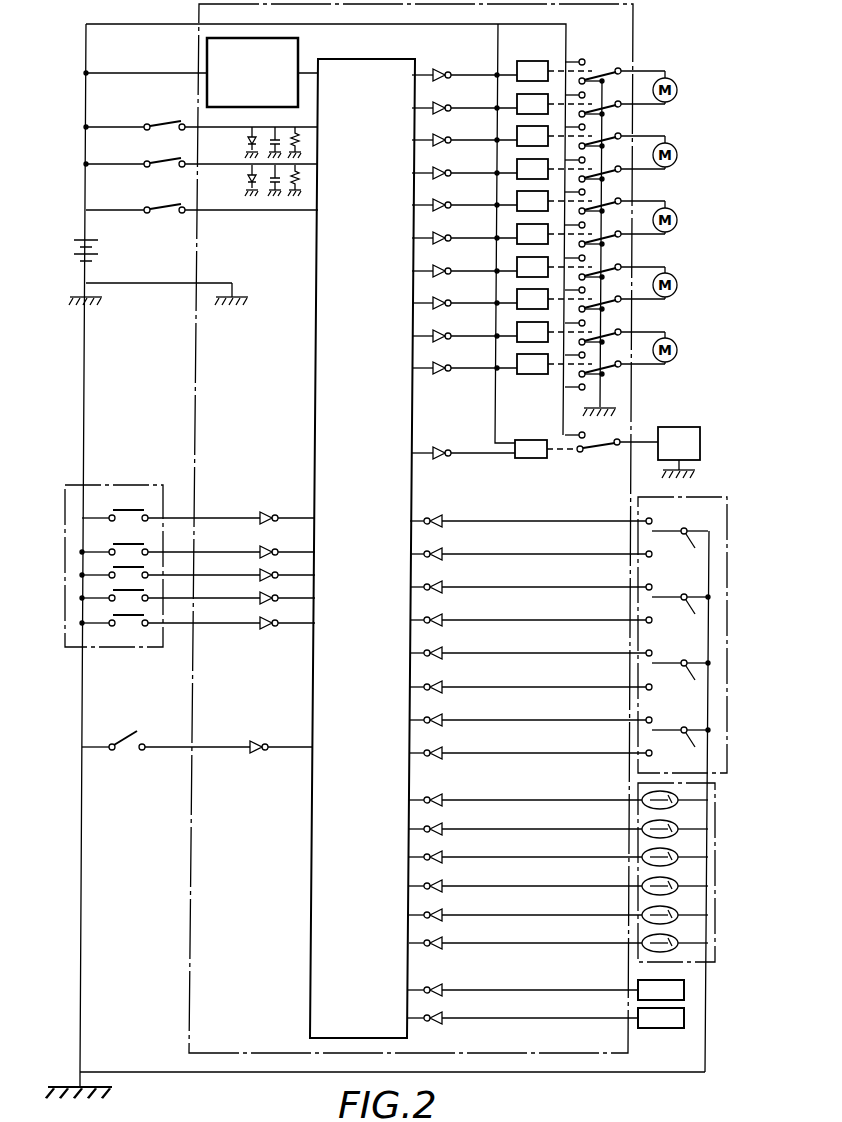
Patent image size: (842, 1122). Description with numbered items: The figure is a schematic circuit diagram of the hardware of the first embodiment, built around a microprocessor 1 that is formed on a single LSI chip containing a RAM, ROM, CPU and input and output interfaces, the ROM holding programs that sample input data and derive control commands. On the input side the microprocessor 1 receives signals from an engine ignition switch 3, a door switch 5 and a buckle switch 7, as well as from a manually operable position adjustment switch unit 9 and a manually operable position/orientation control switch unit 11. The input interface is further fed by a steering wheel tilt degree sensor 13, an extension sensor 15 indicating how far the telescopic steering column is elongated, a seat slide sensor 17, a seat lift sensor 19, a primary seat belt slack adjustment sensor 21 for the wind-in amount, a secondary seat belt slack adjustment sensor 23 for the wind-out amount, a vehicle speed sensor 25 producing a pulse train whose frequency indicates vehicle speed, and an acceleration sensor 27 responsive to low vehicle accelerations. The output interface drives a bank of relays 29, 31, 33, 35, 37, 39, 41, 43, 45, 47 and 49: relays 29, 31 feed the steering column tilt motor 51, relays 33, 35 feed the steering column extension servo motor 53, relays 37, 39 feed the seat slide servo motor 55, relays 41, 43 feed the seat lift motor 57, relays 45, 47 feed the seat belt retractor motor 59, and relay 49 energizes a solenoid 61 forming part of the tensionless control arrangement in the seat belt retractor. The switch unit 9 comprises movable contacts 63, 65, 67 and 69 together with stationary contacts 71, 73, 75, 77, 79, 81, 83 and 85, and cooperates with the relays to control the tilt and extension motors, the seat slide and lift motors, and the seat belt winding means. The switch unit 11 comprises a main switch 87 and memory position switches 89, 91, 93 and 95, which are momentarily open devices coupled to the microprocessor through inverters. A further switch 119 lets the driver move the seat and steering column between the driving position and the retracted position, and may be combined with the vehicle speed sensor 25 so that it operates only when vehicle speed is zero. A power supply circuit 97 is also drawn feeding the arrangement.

The microprocessor 1 is at (390, 59).
The engine ignition switch 3 is at (150, 120).
The door switch 5 is at (150, 158).
The buckle switch 7 is at (150, 202).
The position adjustment switch unit 9 is at (716, 498).
The position/orientation control switch unit 11 is at (63, 512).
The steering wheel tilt degree sensor 13 is at (644, 797).
The extension sensor 15 is at (644, 826).
The seat slide sensor 17 is at (644, 854).
The seat lift sensor 19 is at (644, 883).
The primary seat belt slack adjustment sensor 21 is at (644, 912).
The secondary seat belt slack adjustment sensor 23 is at (644, 940).
The vehicle speed sensor 25 is at (638, 980).
The acceleration sensor 27 is at (640, 1028).
The relay 29 is at (527, 61).
The relay 31 is at (516, 102).
The relay 33 is at (516, 134).
The relay 35 is at (516, 167).
The relay 37 is at (516, 199).
The relay 39 is at (516, 232).
The relay 41 is at (516, 265).
The relay 43 is at (516, 297).
The relay 45 is at (516, 330).
The relay 47 is at (516, 362).
The relay 49 is at (527, 458).
The steering column tilt motor 51 is at (678, 90).
The steering column extension servo motor 53 is at (678, 155).
The seat slide servo motor 55 is at (678, 220).
The seat lift motor 57 is at (678, 285).
The seat belt retractor motor 59 is at (678, 350).
The solenoid 61 is at (686, 427).
The movable contact 63 is at (680, 550).
The movable contact 65 is at (681, 616).
The movable contact 67 is at (681, 682).
The movable contact 69 is at (681, 749).
The stationary contact 71 is at (646, 518).
The stationary contact 73 is at (646, 551).
The stationary contact 75 is at (646, 584).
The stationary contact 77 is at (646, 617).
The stationary contact 79 is at (646, 650).
The stationary contact 81 is at (646, 684).
The stationary contact 83 is at (646, 717).
The stationary contact 85 is at (646, 750).
The main switch 87 is at (130, 510).
The memory position switch 89 is at (129, 544).
The memory position switch 91 is at (112, 567).
The memory position switch 93 is at (112, 590).
The memory position switch 95 is at (130, 617).
The power supply circuit 97 is at (299, 41).
The switch 119 is at (124, 736).